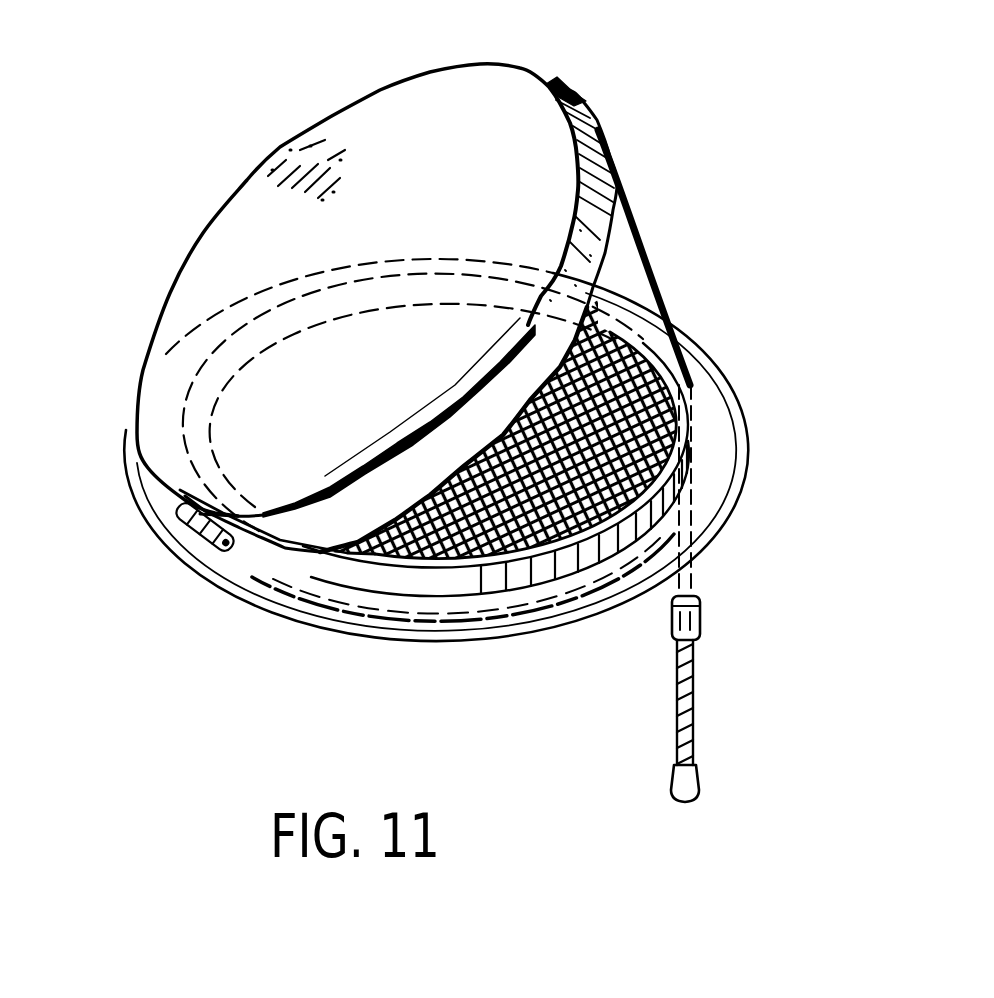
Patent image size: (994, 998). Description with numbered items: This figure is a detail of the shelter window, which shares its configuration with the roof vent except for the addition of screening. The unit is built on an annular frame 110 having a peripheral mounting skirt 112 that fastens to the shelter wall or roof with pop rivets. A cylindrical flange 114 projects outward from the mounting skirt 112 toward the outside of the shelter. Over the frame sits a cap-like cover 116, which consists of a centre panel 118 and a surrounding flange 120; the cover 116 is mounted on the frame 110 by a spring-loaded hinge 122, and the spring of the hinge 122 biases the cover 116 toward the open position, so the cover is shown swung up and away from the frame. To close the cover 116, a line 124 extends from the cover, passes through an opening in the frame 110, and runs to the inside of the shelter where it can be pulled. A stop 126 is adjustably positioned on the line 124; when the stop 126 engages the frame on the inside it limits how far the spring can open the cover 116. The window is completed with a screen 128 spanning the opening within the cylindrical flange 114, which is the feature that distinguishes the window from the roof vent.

The annular frame 110 is at (737, 375).
The peripheral mounting skirt 112 is at (726, 469).
The cylindrical flange 114 is at (343, 584).
The cap-like cover 116 is at (238, 180).
The centre panel 118 is at (477, 97).
The surrounding flange 120 is at (612, 170).
The spring-loaded hinge 122 is at (178, 529).
The line 124 is at (660, 259).
The stop 126 is at (702, 622).
The screen 128 is at (490, 510).